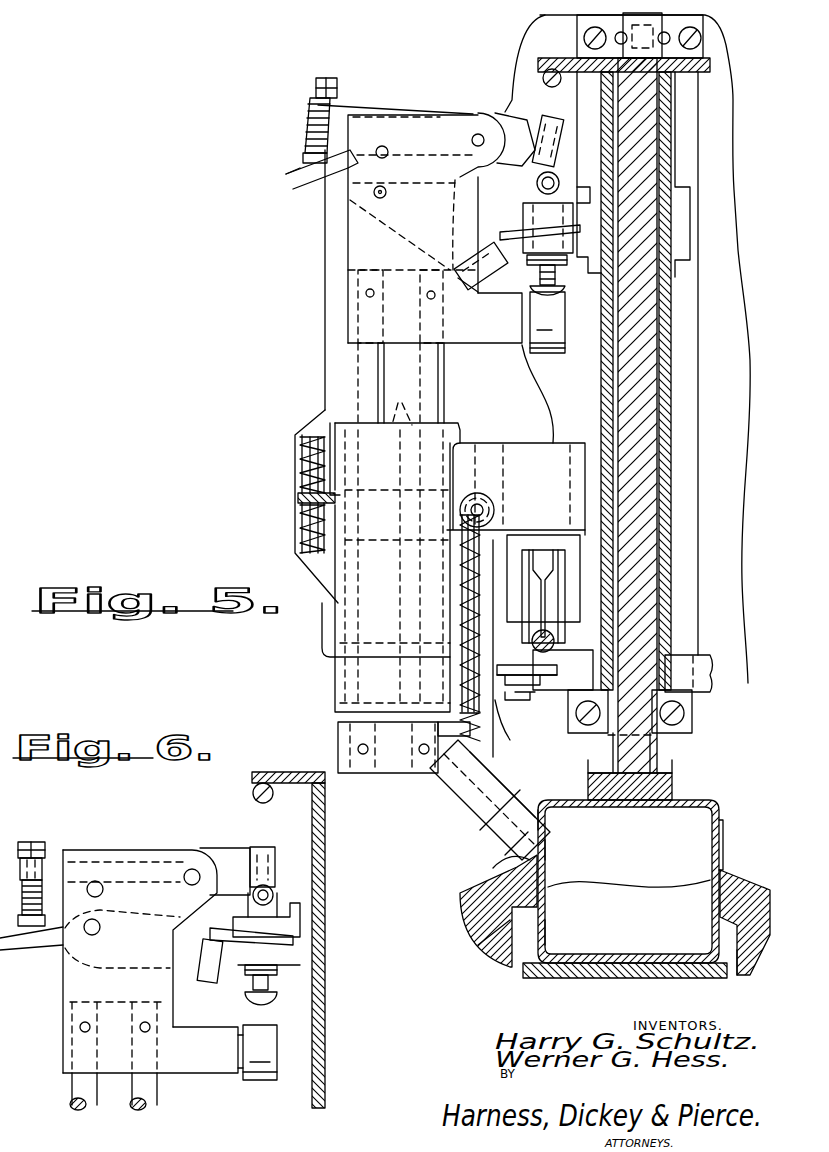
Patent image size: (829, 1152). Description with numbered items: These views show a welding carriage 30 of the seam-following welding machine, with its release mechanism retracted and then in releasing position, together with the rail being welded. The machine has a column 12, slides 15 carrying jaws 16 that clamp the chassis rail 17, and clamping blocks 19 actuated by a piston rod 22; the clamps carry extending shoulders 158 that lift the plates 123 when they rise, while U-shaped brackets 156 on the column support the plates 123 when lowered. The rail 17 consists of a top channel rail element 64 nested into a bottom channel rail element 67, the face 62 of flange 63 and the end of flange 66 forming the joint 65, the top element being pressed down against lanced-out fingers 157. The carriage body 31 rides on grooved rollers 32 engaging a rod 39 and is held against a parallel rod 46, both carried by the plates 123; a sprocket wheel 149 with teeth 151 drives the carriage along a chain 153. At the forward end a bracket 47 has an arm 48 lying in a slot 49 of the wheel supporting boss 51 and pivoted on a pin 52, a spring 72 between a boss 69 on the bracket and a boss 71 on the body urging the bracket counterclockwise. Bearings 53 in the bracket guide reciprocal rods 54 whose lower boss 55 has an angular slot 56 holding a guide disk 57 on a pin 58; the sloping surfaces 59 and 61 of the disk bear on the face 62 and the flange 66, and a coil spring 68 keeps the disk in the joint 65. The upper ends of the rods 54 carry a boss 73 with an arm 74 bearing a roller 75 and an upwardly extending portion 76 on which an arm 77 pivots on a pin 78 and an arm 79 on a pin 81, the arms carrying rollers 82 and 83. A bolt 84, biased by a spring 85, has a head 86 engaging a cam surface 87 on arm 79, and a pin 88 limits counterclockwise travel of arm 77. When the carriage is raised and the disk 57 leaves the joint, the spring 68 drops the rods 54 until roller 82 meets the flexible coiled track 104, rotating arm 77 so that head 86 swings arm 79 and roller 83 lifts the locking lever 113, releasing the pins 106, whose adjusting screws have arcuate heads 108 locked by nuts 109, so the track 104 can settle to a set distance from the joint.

In FIG. 5, the column 12 is at (733, 68).
In FIG. 5, the slide 15 is at (760, 975).
In FIG. 5, the jaw 16 is at (740, 876).
In FIG. 5, the chassis rail 17 is at (650, 915).
In FIG. 5, the clamping block 19 is at (643, 395).
In FIG. 5, the piston rod 22 is at (622, 22).
In FIG. 5, the carriage assembly 30 is at (333, 277).
In FIG. 5, the body 31 is at (473, 382).
In FIG. 5, the grooved roller 32 is at (548, 553).
In FIG. 5, the rod 39 is at (557, 638).
In FIG. 5, the rod 46 is at (543, 78).
In FIG. 6, the rod 46 is at (253, 793).
In FIG. 5, the bracket 47 is at (332, 627).
In FIG. 5, the arm 48 is at (478, 443).
In FIG. 5, the slot 49 is at (535, 443).
In FIG. 5, the forward wheel supporting boss 51 is at (560, 466).
In FIG. 5, the pin 52 is at (494, 506).
In FIG. 5, the bearing 53 is at (330, 692).
In FIG. 5, the reciprocal rod 54 is at (690, 657).
In FIG. 6, the reciprocal rod 54 is at (140, 1110).
In FIG. 5, the boss 55 is at (338, 738).
In FIG. 5, the angularly disposed slot 56 is at (440, 782).
In FIG. 5, the guide disk 57 is at (479, 793).
In FIG. 5, the pin 58 is at (455, 838).
In FIG. 5, the sloping peripheral surface 59 is at (500, 850).
In FIG. 5, the sloping peripheral surface 61 is at (492, 869).
In FIG. 5, the face 62 is at (542, 825).
In FIG. 5, the flange 63 is at (548, 850).
In FIG. 5, the channel rail element 64 is at (640, 808).
In FIG. 5, the joint 65 is at (726, 838).
In FIG. 5, the flange 66 is at (548, 934).
In FIG. 5, the channel rail element 67 is at (620, 975).
In FIG. 5, the coil spring 68 is at (460, 713).
In FIG. 5, the boss 69 is at (298, 537).
In FIG. 5, the boss 71 is at (298, 458).
In FIG. 5, the spring 72 is at (298, 498).
In FIG. 5, the boss 73 is at (355, 297).
In FIG. 5, the extending arm 74 is at (475, 340).
In FIG. 6, the extending arm 74 is at (195, 1073).
In FIG. 5, the roller 75 is at (547, 354).
In FIG. 6, the roller 75 is at (262, 1080).
In FIG. 5, the upwardly extending portion 76 is at (398, 130).
In FIG. 6, the upwardly extending portion 76 is at (118, 860).
In FIG. 5, the arm 77 is at (520, 100).
In FIG. 6, the arm 77 is at (226, 848).
In FIG. 5, the pin 78 is at (476, 134).
In FIG. 6, the pin 78 is at (191, 869).
In FIG. 5, the arm 79 is at (302, 188).
In FIG. 6, the arm 79 is at (180, 950).
In FIG. 5, the pin 81 is at (385, 196).
In FIG. 6, the pin 81 is at (101, 927).
In FIG. 5, the roller 82 is at (548, 117).
In FIG. 6, the roller 82 is at (262, 847).
In FIG. 5, the roller 83 is at (465, 260).
In FIG. 6, the roller 83 is at (212, 982).
In FIG. 5, the bolt 84 is at (327, 78).
In FIG. 6, the bolt 84 is at (30, 842).
In FIG. 5, the spring 85 is at (303, 125).
In FIG. 6, the spring 85 is at (22, 927).
In FIG. 5, the head 86 is at (303, 158).
In FIG. 6, the head 86 is at (31, 920).
In FIG. 5, the cam surface 87 is at (288, 175).
In FIG. 5, the pin 88 is at (382, 146).
In FIG. 6, the pin 88 is at (104, 890).
In FIG. 5, the flexible track 104 is at (537, 183).
In FIG. 6, the flexible track 104 is at (275, 895).
In FIG. 5, the pin 106 is at (523, 206).
In FIG. 6, the pin 106 is at (266, 934).
In FIG. 5, the arcuate head 108 is at (547, 290).
In FIG. 6, the arcuate head 108 is at (272, 1000).
In FIG. 5, the nut 109 is at (547, 270).
In FIG. 6, the nut 109 is at (280, 970).
In FIG. 5, the locking lever 113 is at (491, 279).
In FIG. 6, the locking lever 113 is at (200, 925).
In FIG. 5, the plate 123 is at (663, 460).
In FIG. 5, the sprocket wheel 149 is at (519, 721).
In FIG. 5, the tooth 151 is at (505, 697).
In FIG. 5, the chain 153 is at (526, 664).
In FIG. 5, the U-shaped bracket 156 is at (688, 715).
In FIG. 5, the lanced-out finger 157 is at (570, 888).
In FIG. 5, the extending shoulder 158 is at (660, 768).